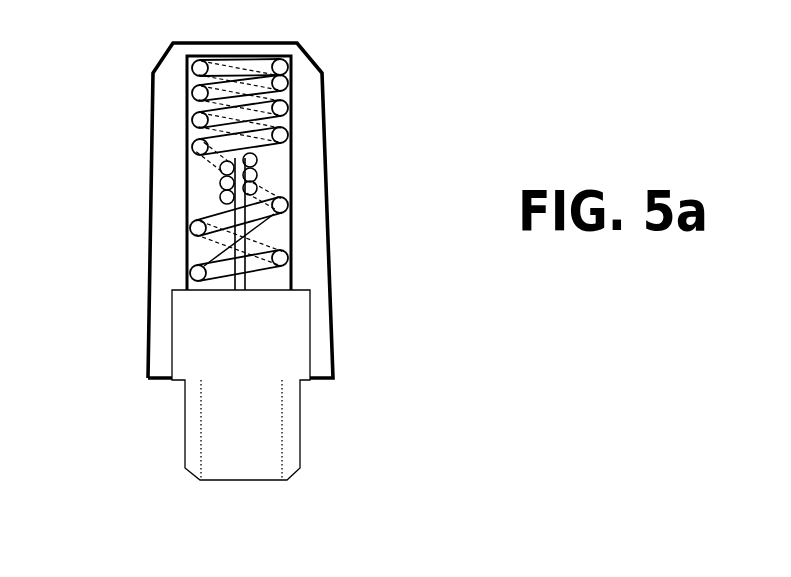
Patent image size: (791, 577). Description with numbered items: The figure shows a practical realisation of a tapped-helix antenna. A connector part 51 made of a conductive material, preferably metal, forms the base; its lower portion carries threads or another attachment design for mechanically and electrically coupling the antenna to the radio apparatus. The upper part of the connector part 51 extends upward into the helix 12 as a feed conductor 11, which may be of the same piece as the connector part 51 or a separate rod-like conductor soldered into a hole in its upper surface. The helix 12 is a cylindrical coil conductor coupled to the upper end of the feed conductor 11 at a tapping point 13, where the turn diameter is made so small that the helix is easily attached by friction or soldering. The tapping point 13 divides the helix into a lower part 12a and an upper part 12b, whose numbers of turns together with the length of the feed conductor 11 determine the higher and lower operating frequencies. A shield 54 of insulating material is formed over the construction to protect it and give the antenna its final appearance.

The feed conductor 11 is at (310, 224).
The helix 12 is at (325, 169).
The lower part of the helix 12a is at (289, 266).
The upper part of the helix 12b is at (290, 94).
The tapping point 13 is at (179, 188).
The connector part 51 is at (224, 385).
The shield 54 is at (194, 210).